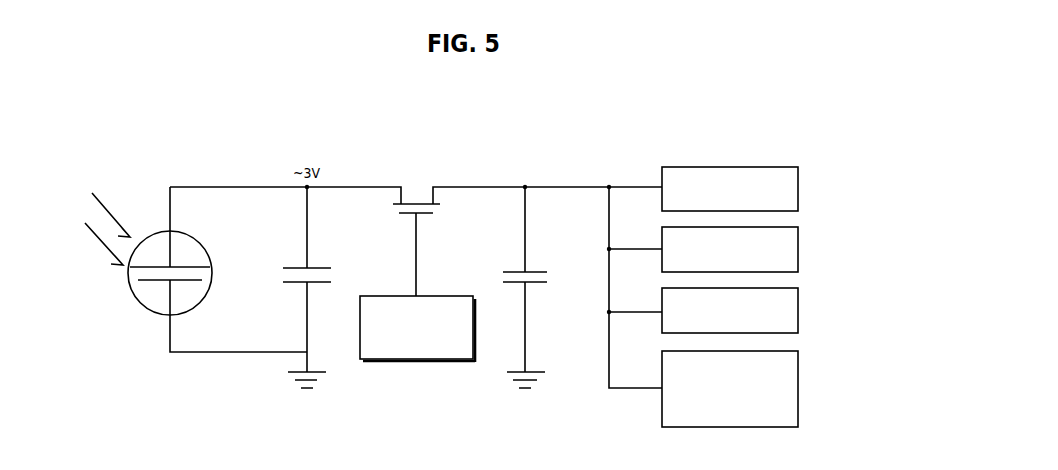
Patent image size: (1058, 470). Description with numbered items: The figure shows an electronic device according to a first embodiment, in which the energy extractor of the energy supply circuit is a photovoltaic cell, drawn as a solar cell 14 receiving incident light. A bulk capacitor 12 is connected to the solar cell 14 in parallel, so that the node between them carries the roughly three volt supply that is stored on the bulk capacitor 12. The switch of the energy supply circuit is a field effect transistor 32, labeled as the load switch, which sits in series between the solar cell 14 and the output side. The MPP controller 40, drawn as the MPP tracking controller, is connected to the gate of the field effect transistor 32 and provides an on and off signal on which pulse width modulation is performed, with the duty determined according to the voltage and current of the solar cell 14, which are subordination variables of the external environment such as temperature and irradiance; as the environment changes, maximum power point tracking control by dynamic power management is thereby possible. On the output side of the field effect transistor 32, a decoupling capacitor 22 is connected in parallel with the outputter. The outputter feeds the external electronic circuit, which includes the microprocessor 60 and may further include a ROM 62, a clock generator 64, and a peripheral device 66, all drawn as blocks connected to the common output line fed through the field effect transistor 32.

The solar cell 14 is at (156, 253).
The bulk capacitor 12 is at (302, 272).
The field effect transistor 32 is at (438, 210).
The decoupling capacitor 22 is at (530, 273).
The MPP controller 40 is at (389, 359).
The microprocessor 60 is at (785, 166).
The ROM 62 is at (785, 227).
The clock generator 64 is at (785, 288).
The peripheral device 66 is at (785, 351).